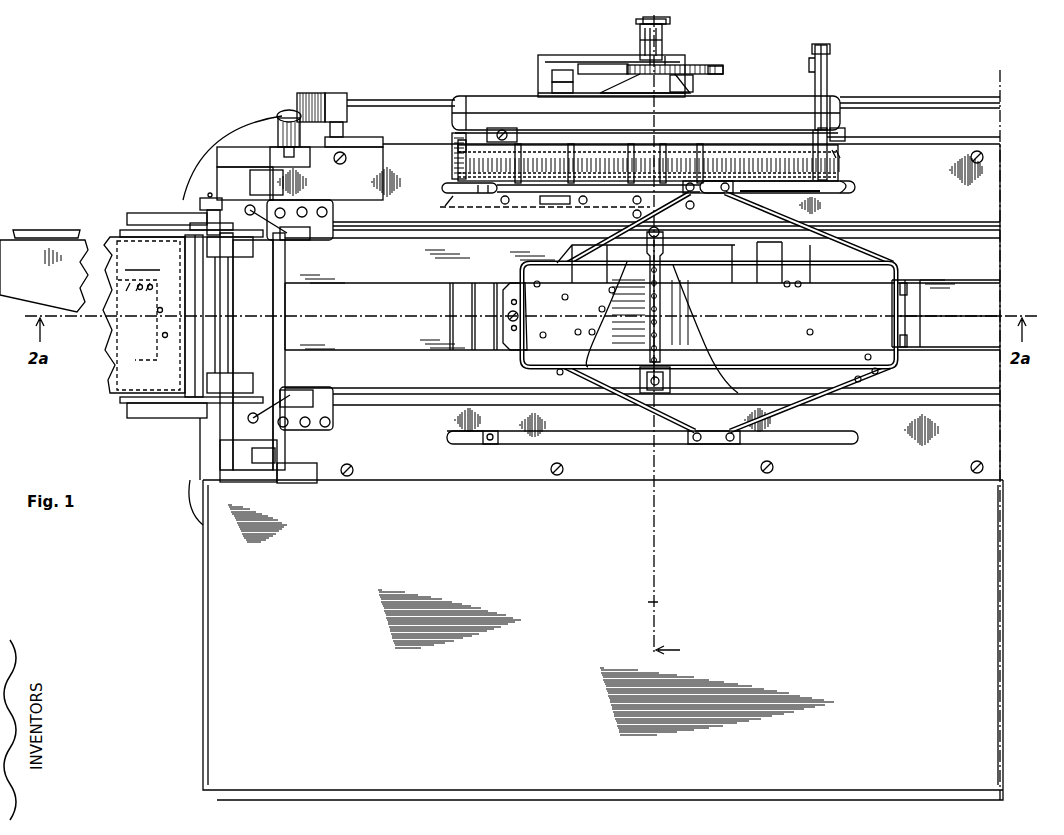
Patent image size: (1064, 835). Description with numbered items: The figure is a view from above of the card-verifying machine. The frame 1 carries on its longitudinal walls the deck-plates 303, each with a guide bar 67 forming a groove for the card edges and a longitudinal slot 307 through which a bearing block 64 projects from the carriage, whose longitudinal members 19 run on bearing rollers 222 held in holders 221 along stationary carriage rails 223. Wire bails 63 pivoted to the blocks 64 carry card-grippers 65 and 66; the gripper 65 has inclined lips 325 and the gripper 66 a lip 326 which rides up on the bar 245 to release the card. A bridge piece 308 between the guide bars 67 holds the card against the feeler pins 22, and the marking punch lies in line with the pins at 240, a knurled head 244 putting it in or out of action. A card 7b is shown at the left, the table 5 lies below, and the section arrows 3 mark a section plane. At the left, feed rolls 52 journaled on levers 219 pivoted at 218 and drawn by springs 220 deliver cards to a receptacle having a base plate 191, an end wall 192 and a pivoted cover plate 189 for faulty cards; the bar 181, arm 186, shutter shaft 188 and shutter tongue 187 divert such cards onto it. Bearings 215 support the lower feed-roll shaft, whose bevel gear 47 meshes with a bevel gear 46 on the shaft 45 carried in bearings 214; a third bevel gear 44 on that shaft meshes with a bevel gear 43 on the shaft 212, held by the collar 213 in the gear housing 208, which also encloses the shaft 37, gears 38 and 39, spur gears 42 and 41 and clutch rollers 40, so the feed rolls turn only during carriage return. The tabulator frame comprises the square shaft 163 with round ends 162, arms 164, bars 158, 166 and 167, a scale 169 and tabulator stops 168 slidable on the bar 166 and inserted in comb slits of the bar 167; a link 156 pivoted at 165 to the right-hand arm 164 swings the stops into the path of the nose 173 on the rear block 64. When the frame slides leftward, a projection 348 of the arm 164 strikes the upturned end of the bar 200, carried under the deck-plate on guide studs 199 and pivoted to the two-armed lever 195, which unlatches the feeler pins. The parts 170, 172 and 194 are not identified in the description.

The frame 1 is at (225, 165).
The setting knob 3 is at (663, 30).
The table 5 is at (603, 640).
The card 7b is at (137, 368).
The longitudinal members 19 is at (595, 437).
The feeler pin 22 is at (660, 352).
The shaft 37 is at (555, 82).
The gear 38 is at (550, 92).
The gear 39 is at (720, 92).
The clutch rollers 40 is at (694, 84).
The gear 41 is at (716, 68).
The spur gear 42 is at (666, 78).
The bevel gear 43 is at (690, 72).
The third bevel gear 44 is at (590, 68).
The shaft 45 is at (897, 102).
The bevel gears 46 is at (310, 95).
The bevel gears 47 is at (286, 118).
The feed rolls 52 is at (284, 246).
The wire bails 63 is at (898, 260).
The bearing block 64 is at (800, 192).
The card-gripper 65 is at (910, 316).
The card-gripper 66 is at (508, 328).
The guide bar 67 is at (940, 225).
The link 156 is at (815, 58).
The bar 158 is at (850, 140).
The round ends 162 is at (840, 130).
The square shaft 163 is at (673, 106).
The arm 164 is at (826, 80).
The pivot 165 is at (826, 46).
The round bar 166 is at (452, 159).
The bar 167 is at (843, 193).
The tabulator stops 168 is at (591, 106).
The scale 169 is at (478, 105).
The guide 170 is at (830, 162).
The stop 172 is at (460, 148).
The nose 173 is at (780, 201).
The bar 181 is at (214, 203).
The arm 186 is at (205, 200).
The shutter tongue 187 is at (235, 248).
The shutter shaft 188 is at (222, 285).
The horizontal plate 189 is at (120, 268).
The base plate 191 is at (135, 223).
The end wall 192 is at (14, 230).
The rod 194 is at (442, 189).
The two-armed lever 195 is at (634, 205).
The guide studs 199 is at (505, 204).
The bar 200 is at (545, 203).
The gear housing 208 is at (548, 62).
The horizontal shaft 212 is at (640, 20).
The collar 213 is at (642, 40).
The bearings 214 is at (340, 100).
The bearings 215 is at (285, 165).
The pivot 218 is at (333, 224).
The lever 219 is at (345, 244).
The springs 220 is at (252, 206).
The holder 221 is at (492, 445).
The bearing rollers 222 is at (472, 436).
The carriage rails 223 is at (270, 178).
The punch 240 is at (666, 245).
The knurled head 244 is at (700, 200).
The bar 245 is at (277, 314).
The deck-plate 303 is at (406, 236).
The longitudinal slot 307 is at (848, 190).
The bridge piece 308 is at (672, 381).
The inclined lips 325 is at (908, 290).
The inclined lip 326 is at (505, 316).
The projection 348 is at (455, 201).